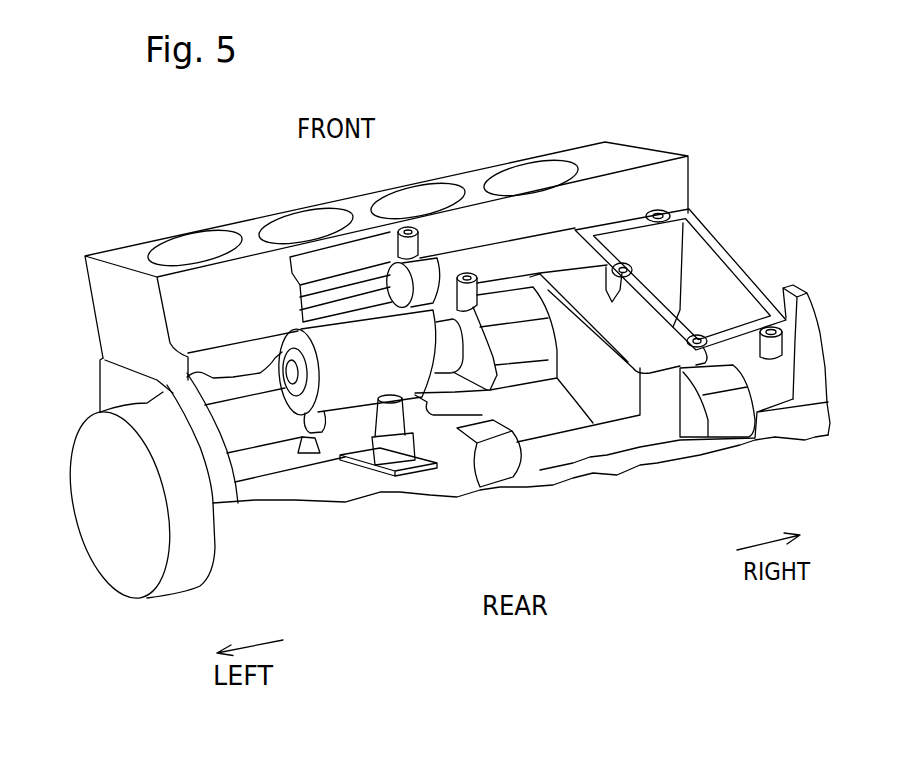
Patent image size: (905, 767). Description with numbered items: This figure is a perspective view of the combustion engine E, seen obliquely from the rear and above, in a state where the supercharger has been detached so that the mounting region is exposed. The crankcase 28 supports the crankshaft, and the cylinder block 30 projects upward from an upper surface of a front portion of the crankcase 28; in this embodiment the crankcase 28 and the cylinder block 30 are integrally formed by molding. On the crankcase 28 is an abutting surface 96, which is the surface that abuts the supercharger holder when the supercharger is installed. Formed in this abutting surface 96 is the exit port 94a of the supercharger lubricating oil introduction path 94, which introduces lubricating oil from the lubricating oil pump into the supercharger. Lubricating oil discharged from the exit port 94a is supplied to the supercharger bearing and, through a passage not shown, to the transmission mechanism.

The combustion engine E is at (726, 136).
The crankcase 28 is at (300, 492).
The cylinder block 30 is at (228, 285).
The supercharger lubricating oil introduction path 94 is at (606, 268).
The exit port 94a is at (624, 266).
The abutting surface 96 is at (665, 298).